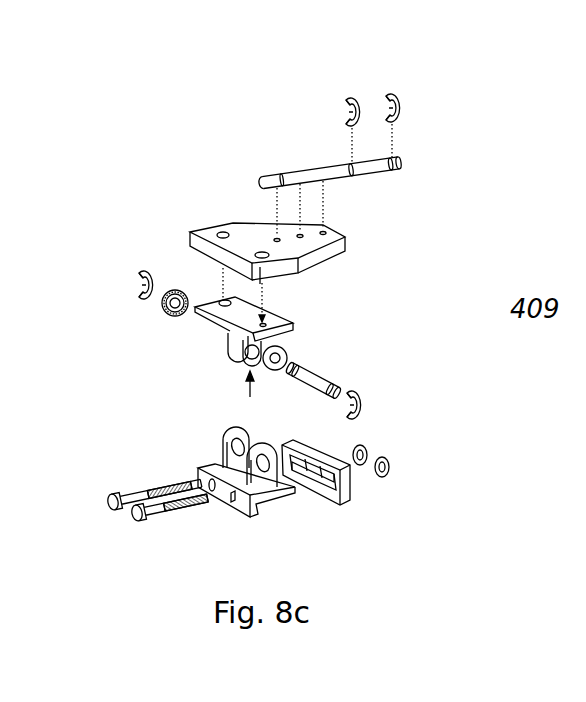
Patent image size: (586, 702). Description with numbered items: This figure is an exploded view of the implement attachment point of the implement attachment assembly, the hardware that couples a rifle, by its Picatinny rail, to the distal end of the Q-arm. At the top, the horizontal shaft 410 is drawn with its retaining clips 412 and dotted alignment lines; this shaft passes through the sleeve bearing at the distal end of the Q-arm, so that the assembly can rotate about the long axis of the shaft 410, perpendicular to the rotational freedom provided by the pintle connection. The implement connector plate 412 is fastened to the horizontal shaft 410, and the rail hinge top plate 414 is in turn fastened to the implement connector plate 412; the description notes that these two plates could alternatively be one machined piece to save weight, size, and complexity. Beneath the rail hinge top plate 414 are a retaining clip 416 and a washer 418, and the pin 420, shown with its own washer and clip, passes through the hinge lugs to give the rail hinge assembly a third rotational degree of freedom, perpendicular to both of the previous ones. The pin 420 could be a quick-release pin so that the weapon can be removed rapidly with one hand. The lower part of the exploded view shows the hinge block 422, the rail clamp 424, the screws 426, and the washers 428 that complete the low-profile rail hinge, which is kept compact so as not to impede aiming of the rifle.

The horizontal shaft 410 is at (400, 178).
The implement connector plate 412 is at (347, 83).
The rail hinge top plate 414 is at (217, 350).
The retaining clip 416 is at (127, 283).
The washer 418 is at (147, 327).
The pin 420 is at (337, 363).
The mounting block 422 is at (277, 500).
The rail 424 is at (355, 498).
The screws 426 is at (130, 513).
The washers 428 is at (370, 445).